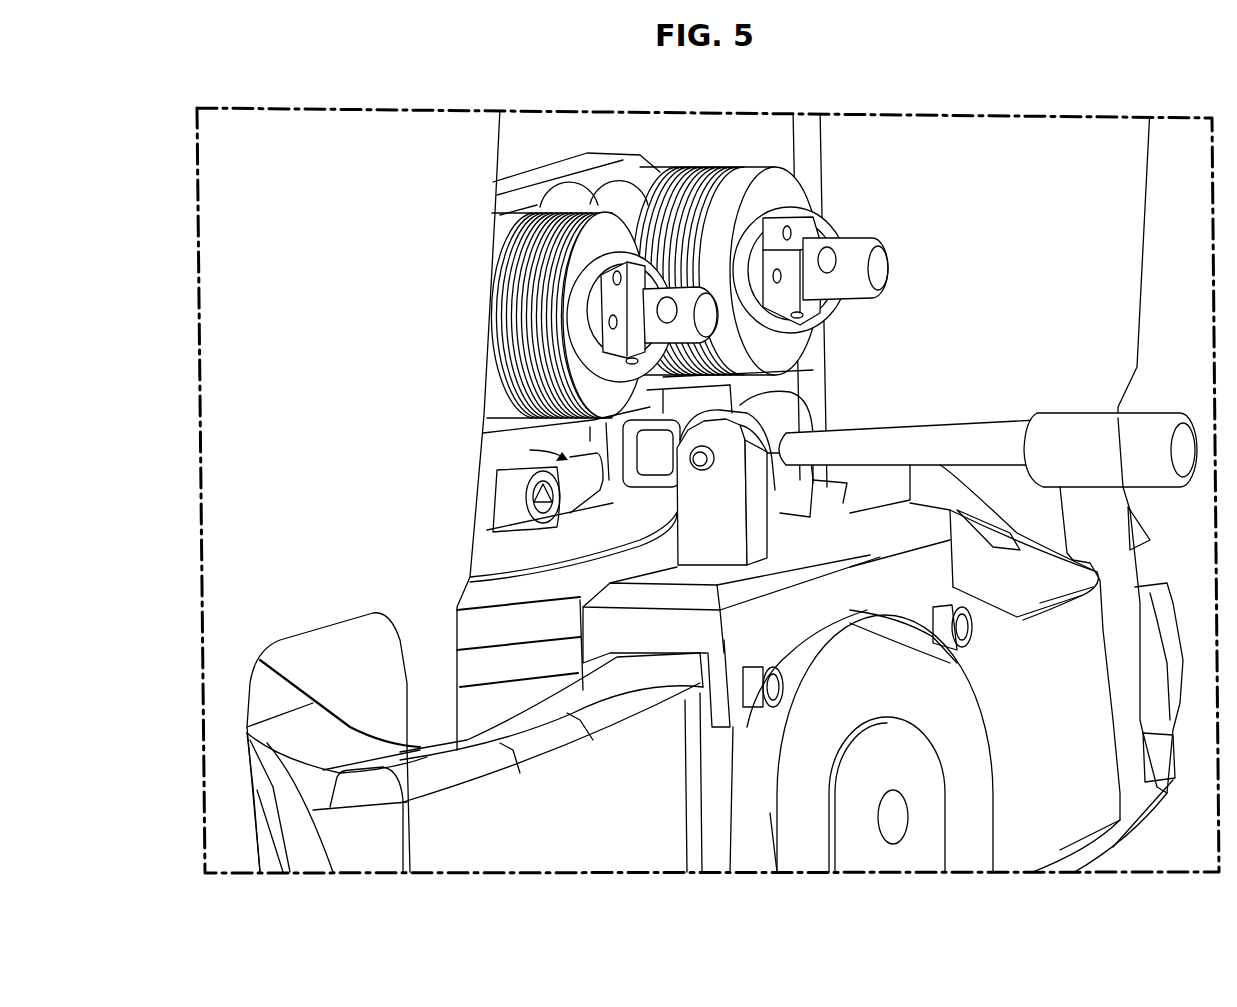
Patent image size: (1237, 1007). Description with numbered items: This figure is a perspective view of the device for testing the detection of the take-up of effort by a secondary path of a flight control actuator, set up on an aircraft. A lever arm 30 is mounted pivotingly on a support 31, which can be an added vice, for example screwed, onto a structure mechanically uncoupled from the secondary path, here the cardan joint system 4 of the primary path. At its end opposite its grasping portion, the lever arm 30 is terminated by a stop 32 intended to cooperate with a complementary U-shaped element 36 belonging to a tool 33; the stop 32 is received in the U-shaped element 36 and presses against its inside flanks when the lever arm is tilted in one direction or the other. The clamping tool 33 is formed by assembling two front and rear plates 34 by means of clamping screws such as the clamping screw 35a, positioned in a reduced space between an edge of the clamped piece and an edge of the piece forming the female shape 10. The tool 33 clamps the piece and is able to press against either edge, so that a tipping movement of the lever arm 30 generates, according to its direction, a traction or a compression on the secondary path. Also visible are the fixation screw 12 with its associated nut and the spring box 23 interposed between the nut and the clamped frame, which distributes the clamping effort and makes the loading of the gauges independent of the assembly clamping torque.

The cardan joint system 4 is at (593, 830).
The piece forming the female shape 10 is at (473, 627).
The fixation screw 12 is at (712, 315).
The spring box 23 is at (689, 166).
The lever arm 30 is at (920, 440).
The support 31 is at (910, 587).
The stop 32 is at (650, 413).
The tool 33 is at (627, 497).
The front and rear plates 34 is at (483, 400).
The clamping screw 35a is at (507, 500).
The U-shaped element 36 is at (612, 503).